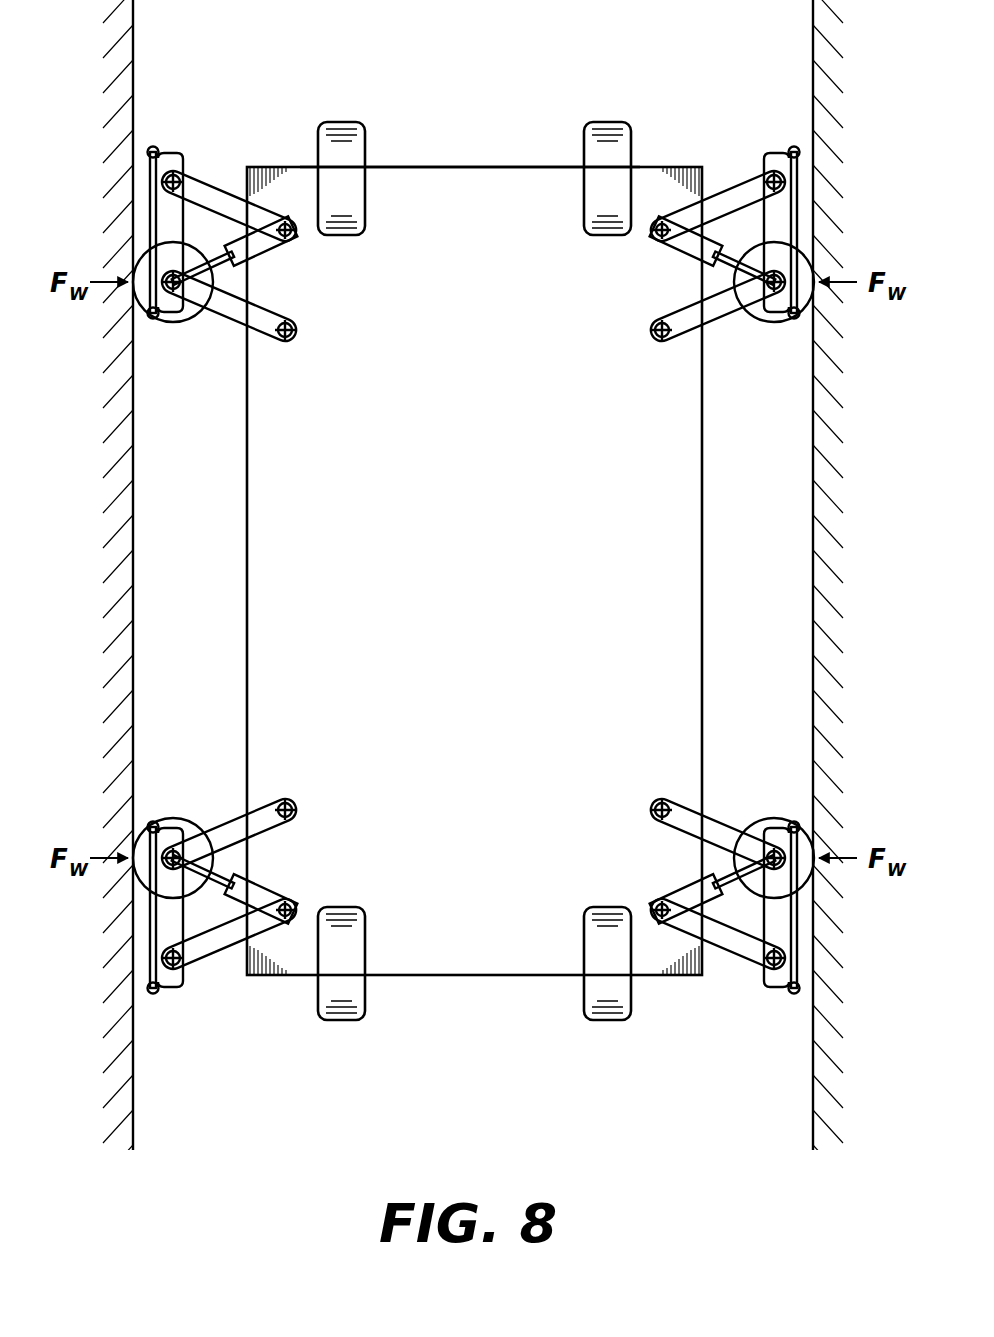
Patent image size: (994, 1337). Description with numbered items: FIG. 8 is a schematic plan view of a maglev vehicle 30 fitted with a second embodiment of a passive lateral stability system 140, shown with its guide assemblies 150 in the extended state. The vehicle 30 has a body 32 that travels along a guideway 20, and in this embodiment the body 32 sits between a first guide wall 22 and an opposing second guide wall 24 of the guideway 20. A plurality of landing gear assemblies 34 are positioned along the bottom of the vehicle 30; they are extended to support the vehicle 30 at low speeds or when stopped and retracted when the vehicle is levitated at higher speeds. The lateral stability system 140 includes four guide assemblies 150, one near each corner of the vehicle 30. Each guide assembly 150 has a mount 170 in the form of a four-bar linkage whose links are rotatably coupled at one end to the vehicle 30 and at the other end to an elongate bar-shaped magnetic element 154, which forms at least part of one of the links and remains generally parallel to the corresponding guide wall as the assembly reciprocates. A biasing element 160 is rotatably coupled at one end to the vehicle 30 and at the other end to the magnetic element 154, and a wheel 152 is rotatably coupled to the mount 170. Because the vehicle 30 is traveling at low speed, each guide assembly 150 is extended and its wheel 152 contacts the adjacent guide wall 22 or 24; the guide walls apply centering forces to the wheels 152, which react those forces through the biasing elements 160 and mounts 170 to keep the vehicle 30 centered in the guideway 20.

The guideway 20 is at (163, 92).
The first guide wall 22 is at (133, 32).
The second guide wall 24 is at (813, 56).
The vehicle 30 is at (410, 163).
The body 32 is at (473, 166).
The landing gear assembly 34 is at (342, 122).
The passive lateral stability system 140 is at (738, 110).
The guide assembly 150 is at (213, 163).
The wheel 152 is at (188, 319).
The magnetic element 154 is at (160, 212).
The biasing element 160 is at (290, 242).
The mount 170 is at (257, 342).